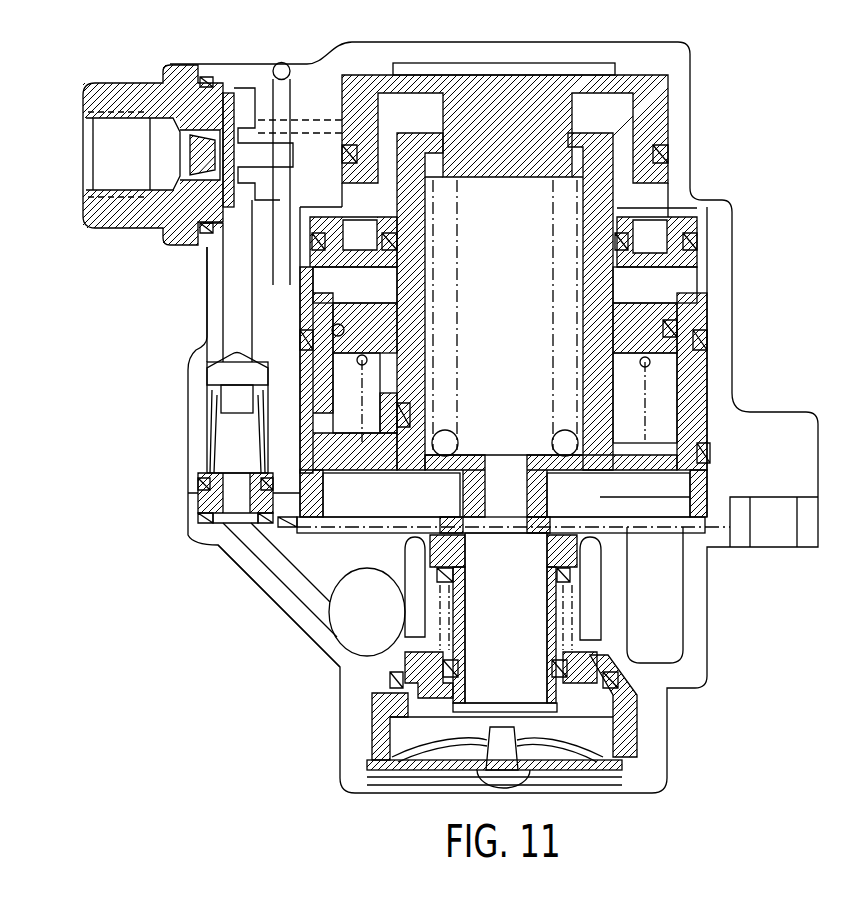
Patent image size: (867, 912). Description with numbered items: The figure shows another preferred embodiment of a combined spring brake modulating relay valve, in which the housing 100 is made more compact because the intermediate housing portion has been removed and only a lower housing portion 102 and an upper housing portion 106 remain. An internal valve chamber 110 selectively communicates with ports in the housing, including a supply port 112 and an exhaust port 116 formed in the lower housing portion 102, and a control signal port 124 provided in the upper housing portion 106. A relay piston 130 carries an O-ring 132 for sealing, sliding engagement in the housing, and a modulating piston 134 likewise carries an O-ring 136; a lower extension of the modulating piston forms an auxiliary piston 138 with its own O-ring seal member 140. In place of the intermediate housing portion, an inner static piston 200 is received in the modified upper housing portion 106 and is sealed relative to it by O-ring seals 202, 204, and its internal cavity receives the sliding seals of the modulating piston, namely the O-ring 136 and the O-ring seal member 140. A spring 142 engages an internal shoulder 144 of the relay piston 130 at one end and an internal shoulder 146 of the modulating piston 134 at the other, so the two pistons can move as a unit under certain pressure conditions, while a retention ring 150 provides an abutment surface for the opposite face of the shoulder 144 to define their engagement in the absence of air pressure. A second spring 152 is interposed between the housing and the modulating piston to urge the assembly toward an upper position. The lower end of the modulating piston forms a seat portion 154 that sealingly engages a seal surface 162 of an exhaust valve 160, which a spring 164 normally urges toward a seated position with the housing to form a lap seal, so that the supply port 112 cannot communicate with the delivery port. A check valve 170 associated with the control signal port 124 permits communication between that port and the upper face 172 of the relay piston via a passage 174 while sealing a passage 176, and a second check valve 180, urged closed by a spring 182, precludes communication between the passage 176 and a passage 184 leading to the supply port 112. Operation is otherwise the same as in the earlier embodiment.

The housing 100 is at (190, 533).
The lower housing portion 102 is at (251, 567).
The upper housing portion 106 is at (678, 117).
The valve chamber 110 is at (670, 597).
The supply port 112 is at (347, 641).
The exhaust port 116 is at (600, 776).
The control signal port 124 is at (85, 176).
The relay piston 130 is at (662, 88).
The O-ring 132 is at (670, 157).
The modulating piston 134 is at (590, 310).
The O-ring 136 is at (708, 320).
The auxiliary piston 138 is at (403, 395).
The O-ring seal member 140 is at (590, 407).
The spring 142 is at (563, 229).
The internal shoulder 144 is at (462, 168).
The internal shoulder 146 is at (537, 453).
The retention ring 150 is at (425, 152).
The spring 152 is at (360, 378).
The seat portion 154 is at (510, 538).
The exhaust valve 160 is at (547, 624).
The seal surface 162 is at (467, 541).
The spring 164 is at (450, 637).
The check valve 170 is at (226, 100).
The upper face 172 is at (581, 72).
The passage 174 is at (307, 120).
The passage 176 is at (288, 222).
The check valve 180 is at (213, 385).
The spring 182 is at (213, 435).
The passage 184 is at (293, 582).
The static piston 200 is at (702, 370).
The O-ring seal 202 is at (707, 340).
The O-ring seal 204 is at (708, 443).